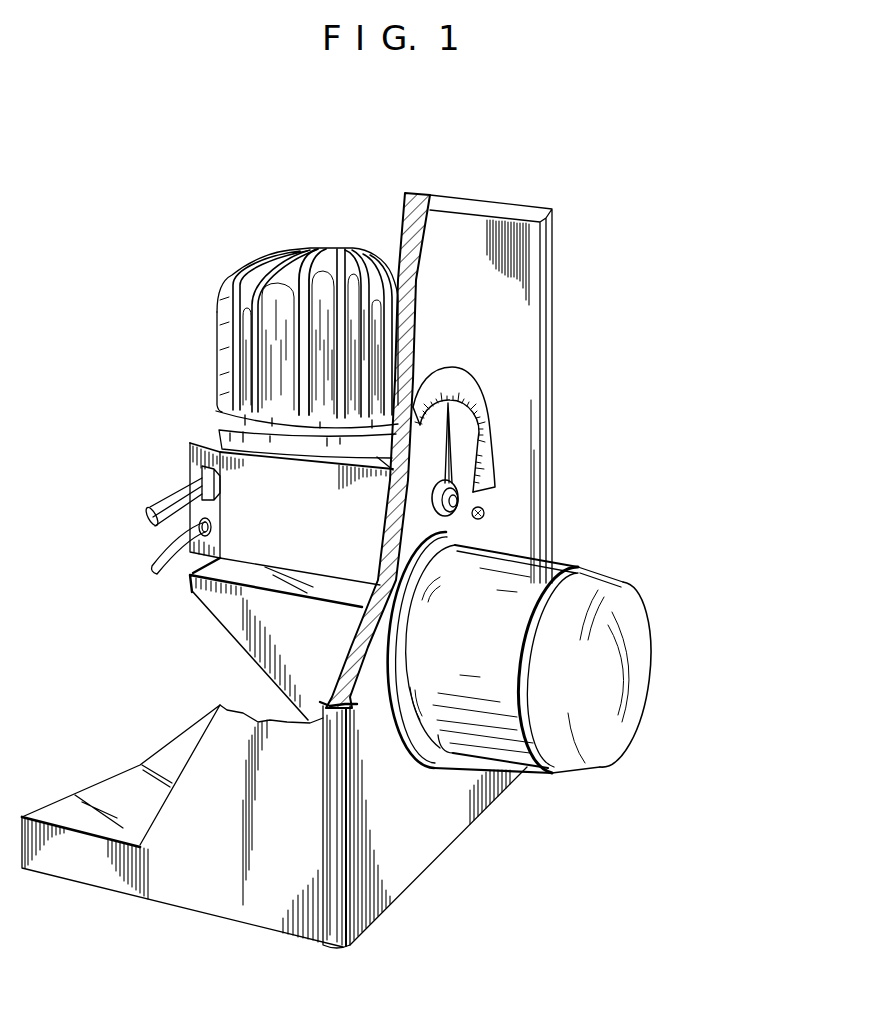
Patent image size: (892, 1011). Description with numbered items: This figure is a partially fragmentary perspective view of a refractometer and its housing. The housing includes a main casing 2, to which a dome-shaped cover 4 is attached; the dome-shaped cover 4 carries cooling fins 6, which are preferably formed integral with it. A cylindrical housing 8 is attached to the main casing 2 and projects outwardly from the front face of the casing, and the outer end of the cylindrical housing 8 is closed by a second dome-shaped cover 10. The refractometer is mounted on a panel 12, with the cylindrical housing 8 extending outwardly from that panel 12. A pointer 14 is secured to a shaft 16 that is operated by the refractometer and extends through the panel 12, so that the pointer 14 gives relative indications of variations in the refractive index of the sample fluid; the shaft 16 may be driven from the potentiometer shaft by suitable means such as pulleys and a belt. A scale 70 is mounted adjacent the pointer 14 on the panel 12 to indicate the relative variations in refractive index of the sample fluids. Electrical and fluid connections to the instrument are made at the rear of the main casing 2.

The main casing 2 is at (229, 640).
The dome-shaped cover 4 is at (208, 337).
The cooling fins 6 is at (330, 250).
The cylindrical housing 8 is at (473, 733).
The second dome-shaped cover 10 is at (597, 757).
The panel 12 is at (512, 287).
The pointer 14 is at (445, 461).
The shaft 16 is at (458, 503).
The scale 70 is at (461, 380).